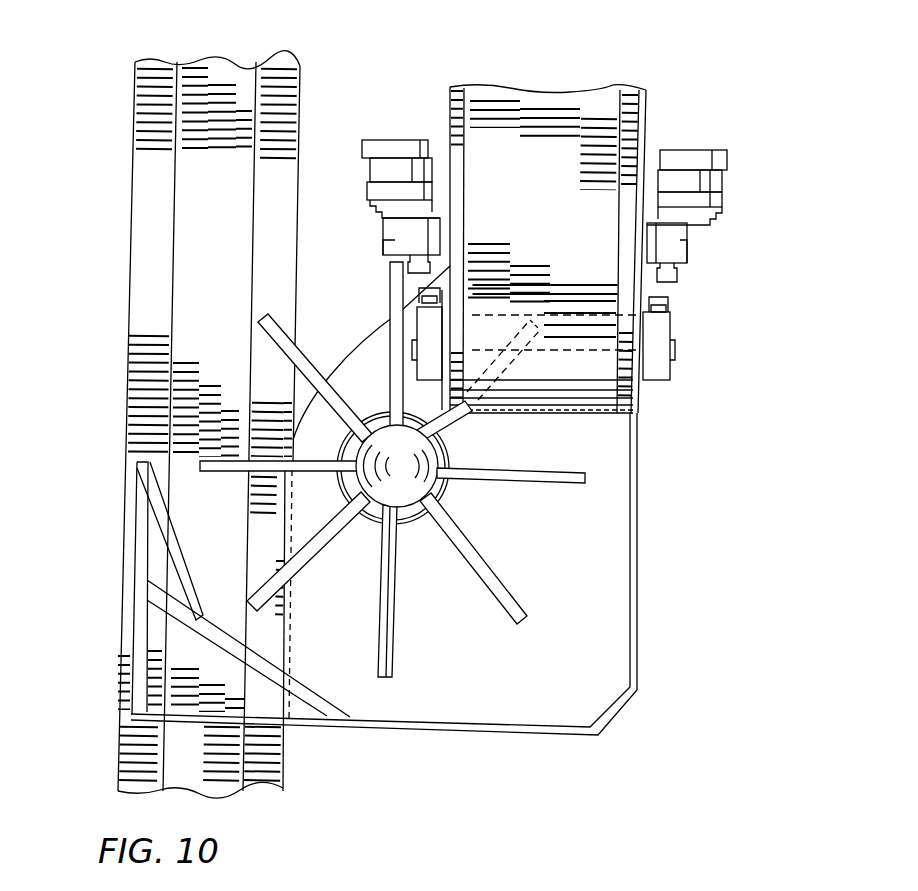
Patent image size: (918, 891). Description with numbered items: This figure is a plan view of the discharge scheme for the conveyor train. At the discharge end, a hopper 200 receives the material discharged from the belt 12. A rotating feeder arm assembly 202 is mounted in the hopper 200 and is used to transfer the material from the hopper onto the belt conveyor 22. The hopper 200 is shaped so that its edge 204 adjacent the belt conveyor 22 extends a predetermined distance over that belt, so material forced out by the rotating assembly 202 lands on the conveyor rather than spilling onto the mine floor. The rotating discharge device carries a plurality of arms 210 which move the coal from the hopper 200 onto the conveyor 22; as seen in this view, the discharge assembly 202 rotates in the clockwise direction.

The belt 12 is at (585, 120).
The belt conveyor 22 is at (188, 244).
The hopper 200 is at (593, 595).
The rotating feeder arm assembly 202 is at (442, 645).
The hopper edge 204 is at (293, 438).
The arms 210 is at (587, 477).